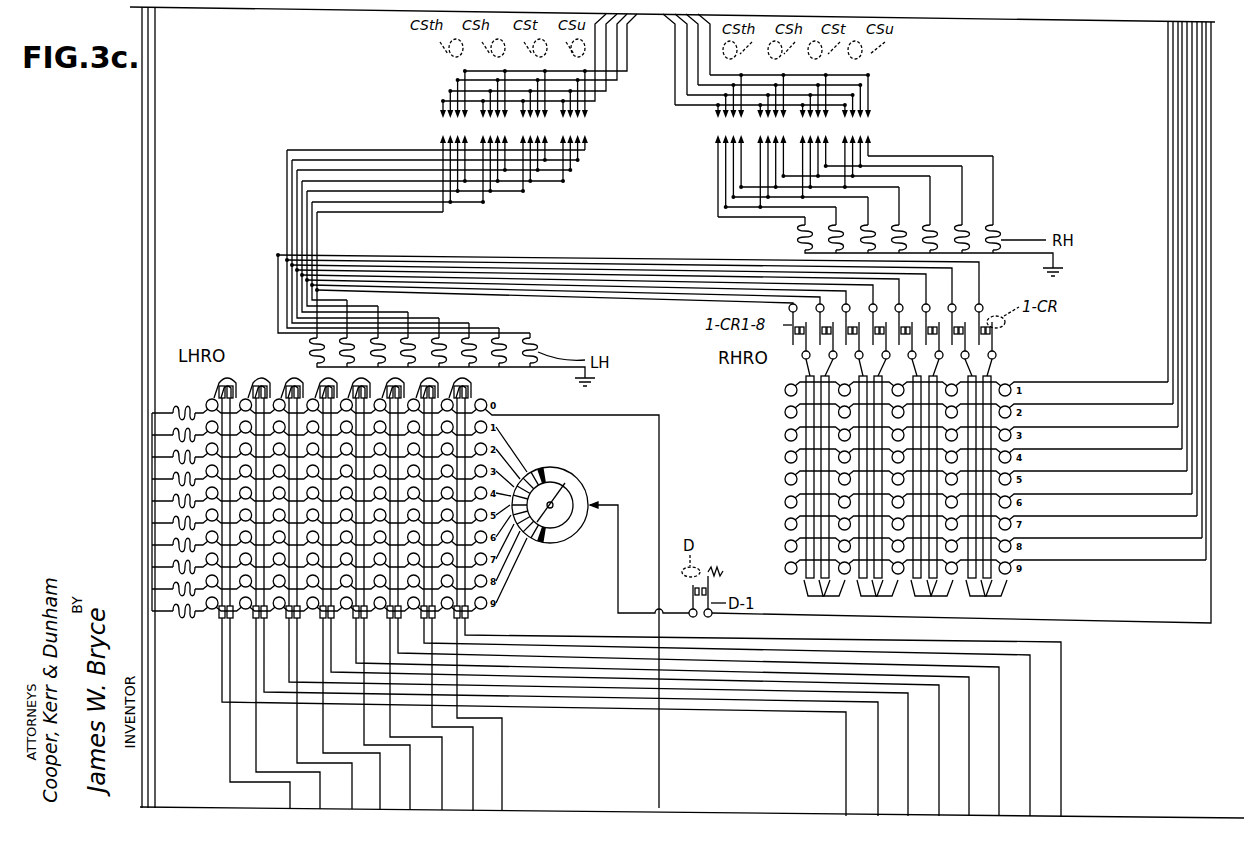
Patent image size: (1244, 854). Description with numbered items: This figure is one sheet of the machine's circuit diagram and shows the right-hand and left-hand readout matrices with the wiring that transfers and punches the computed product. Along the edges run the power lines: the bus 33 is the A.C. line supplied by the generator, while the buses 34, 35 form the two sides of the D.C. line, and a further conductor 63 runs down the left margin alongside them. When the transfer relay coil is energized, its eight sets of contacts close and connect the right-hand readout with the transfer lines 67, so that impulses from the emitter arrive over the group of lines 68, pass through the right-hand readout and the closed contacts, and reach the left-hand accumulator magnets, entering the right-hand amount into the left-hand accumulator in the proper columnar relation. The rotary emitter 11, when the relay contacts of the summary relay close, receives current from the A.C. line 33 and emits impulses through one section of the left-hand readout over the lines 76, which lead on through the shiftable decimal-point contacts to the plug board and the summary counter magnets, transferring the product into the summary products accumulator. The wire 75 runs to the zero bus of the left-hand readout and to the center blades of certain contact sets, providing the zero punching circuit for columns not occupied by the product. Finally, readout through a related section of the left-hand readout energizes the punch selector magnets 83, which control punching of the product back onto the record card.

The emitter 11 is at (577, 490).
The bus 33 is at (1108, 623).
The bus 34 is at (148, 700).
The bus 35 is at (154, 724).
The conductor 63 is at (141, 364).
The transfer lines 67 is at (603, 262).
The group of lines 68 is at (1178, 167).
The wire 75 is at (656, 448).
The lines 76 is at (878, 745).
The punch selector magnets 83 is at (175, 506).